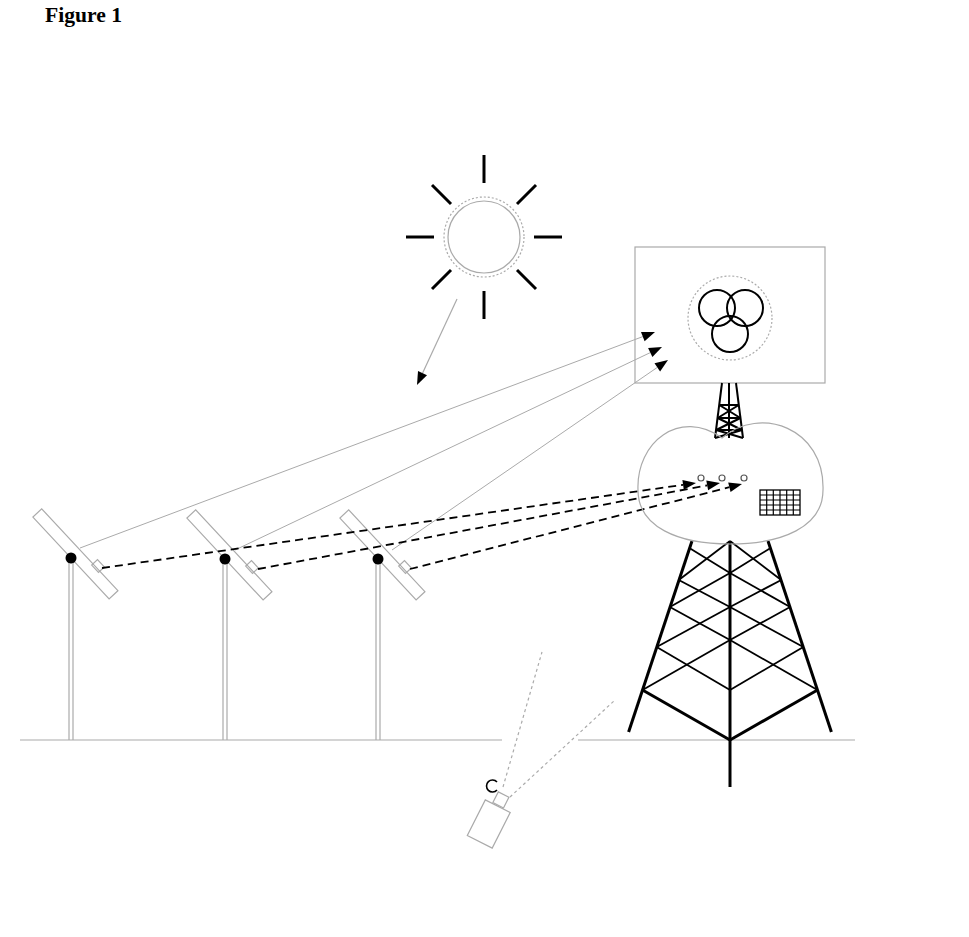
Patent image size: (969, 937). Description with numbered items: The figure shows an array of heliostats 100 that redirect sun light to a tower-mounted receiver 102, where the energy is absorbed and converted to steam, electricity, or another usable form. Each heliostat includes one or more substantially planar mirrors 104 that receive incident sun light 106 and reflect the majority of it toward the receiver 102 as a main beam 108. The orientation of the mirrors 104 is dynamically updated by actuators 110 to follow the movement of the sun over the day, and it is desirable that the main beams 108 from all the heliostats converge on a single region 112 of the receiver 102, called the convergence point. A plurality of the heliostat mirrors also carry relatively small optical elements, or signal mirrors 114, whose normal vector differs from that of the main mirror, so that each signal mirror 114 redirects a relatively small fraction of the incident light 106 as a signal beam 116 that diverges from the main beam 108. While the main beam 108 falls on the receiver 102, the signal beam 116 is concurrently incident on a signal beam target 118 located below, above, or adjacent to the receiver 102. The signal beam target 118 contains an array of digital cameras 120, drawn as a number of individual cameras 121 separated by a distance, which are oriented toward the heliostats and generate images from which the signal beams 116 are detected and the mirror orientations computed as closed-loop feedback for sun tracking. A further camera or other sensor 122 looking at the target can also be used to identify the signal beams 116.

The array of heliostats 100 is at (182, 220).
The tower-mounted receiver 102 is at (765, 247).
The mirror 104 is at (55, 518).
The incident sun light 106 is at (432, 342).
The main beam 108 is at (710, 297).
The actuator 110 is at (65, 563).
The convergence point 112 is at (773, 318).
The signal mirror 114 is at (110, 575).
The signal beam 116 is at (750, 478).
The signal beam target 118 is at (825, 492).
The array of digital cameras 120 is at (790, 518).
The digital camera 121 is at (800, 495).
The camera or other sensor 122 is at (528, 805).